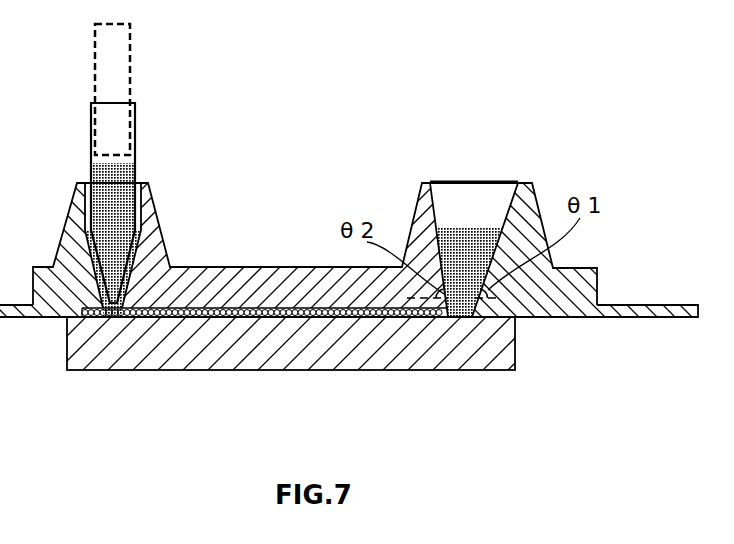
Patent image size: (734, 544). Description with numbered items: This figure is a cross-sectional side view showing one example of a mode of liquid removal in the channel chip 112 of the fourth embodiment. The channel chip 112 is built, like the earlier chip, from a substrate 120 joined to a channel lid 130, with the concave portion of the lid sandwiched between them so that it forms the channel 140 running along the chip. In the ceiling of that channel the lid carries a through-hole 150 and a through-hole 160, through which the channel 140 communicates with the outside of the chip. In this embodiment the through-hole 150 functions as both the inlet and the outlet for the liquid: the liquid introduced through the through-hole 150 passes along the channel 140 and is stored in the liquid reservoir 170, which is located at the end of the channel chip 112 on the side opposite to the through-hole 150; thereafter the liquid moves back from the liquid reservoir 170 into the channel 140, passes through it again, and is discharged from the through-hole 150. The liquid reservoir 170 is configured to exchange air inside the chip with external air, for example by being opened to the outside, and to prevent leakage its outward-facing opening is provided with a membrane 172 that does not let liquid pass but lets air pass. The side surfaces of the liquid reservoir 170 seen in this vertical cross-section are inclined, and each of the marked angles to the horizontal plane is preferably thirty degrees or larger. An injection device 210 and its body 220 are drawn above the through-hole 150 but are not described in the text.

The channel chip 112 is at (539, 210).
The substrate 120 is at (443, 363).
The channel lid 130 is at (573, 318).
The channel 140 is at (260, 308).
The through-hole 150 is at (133, 242).
The through-hole 160 is at (463, 262).
The liquid reservoir 170 is at (452, 212).
The membrane 172 is at (505, 180).
The nozzle 210 is at (110, 176).
The nozzle body 220 is at (117, 53).